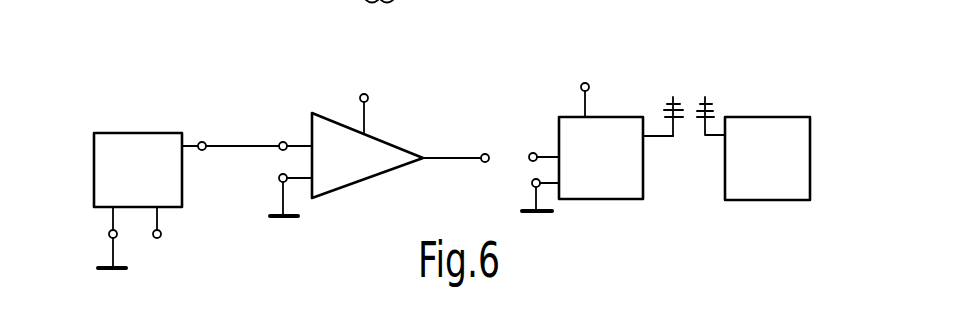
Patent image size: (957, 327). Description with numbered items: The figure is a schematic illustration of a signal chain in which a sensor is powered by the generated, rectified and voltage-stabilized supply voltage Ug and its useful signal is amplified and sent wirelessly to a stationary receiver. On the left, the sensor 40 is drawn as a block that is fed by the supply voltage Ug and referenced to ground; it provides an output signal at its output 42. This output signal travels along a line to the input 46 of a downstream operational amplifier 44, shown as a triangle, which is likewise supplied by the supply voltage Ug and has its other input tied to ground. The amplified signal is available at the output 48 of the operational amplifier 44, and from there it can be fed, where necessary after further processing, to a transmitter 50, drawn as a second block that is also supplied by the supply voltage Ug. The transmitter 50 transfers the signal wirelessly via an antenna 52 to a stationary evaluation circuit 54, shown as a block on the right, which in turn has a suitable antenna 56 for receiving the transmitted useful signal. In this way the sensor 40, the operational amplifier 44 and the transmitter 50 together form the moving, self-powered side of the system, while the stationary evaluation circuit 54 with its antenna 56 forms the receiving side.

The sensor 40 is at (130, 163).
The output 42 is at (202, 142).
The operational amplifier 44 is at (342, 170).
The input 46 is at (284, 142).
The output 48 is at (478, 145).
The transmitter 50 is at (603, 180).
The antenna 52 is at (664, 109).
The stationary evaluation circuit 54 is at (765, 178).
The antenna 56 is at (712, 108).